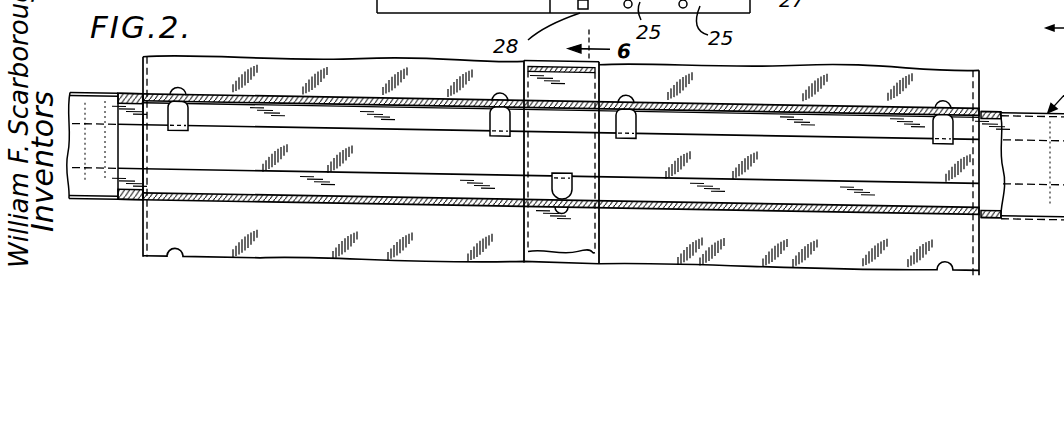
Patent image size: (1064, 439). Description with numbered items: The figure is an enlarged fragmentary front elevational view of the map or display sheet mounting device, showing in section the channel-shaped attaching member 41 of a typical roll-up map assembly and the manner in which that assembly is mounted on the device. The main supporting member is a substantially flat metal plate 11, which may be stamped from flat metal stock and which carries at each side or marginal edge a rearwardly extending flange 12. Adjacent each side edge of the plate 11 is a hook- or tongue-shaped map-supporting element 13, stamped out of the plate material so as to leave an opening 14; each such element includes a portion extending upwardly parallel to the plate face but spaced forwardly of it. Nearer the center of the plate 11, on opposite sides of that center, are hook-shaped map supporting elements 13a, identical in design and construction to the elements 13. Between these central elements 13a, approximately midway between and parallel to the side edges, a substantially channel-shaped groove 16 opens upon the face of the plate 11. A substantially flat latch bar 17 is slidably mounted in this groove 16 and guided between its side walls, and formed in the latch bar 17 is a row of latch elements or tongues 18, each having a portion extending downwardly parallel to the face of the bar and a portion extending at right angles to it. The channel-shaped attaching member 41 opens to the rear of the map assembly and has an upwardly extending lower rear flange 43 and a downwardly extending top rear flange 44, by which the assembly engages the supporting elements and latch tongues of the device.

The main supporting member or plate 11 is at (840, 74).
The rearwardly extending flange 12 is at (143, 76).
The map-supporting element 13 is at (183, 118).
The hook-shaped map supporting element 13a is at (490, 116).
The opening 14 is at (179, 97).
The channel-shaped groove 16 is at (587, 259).
The latch bar 17 is at (585, 227).
The latch element or tongue 18 is at (570, 181).
The channel-shaped attaching member 41 is at (740, 103).
The lower rear flange 43 is at (875, 190).
The top rear flange 44 is at (813, 120).